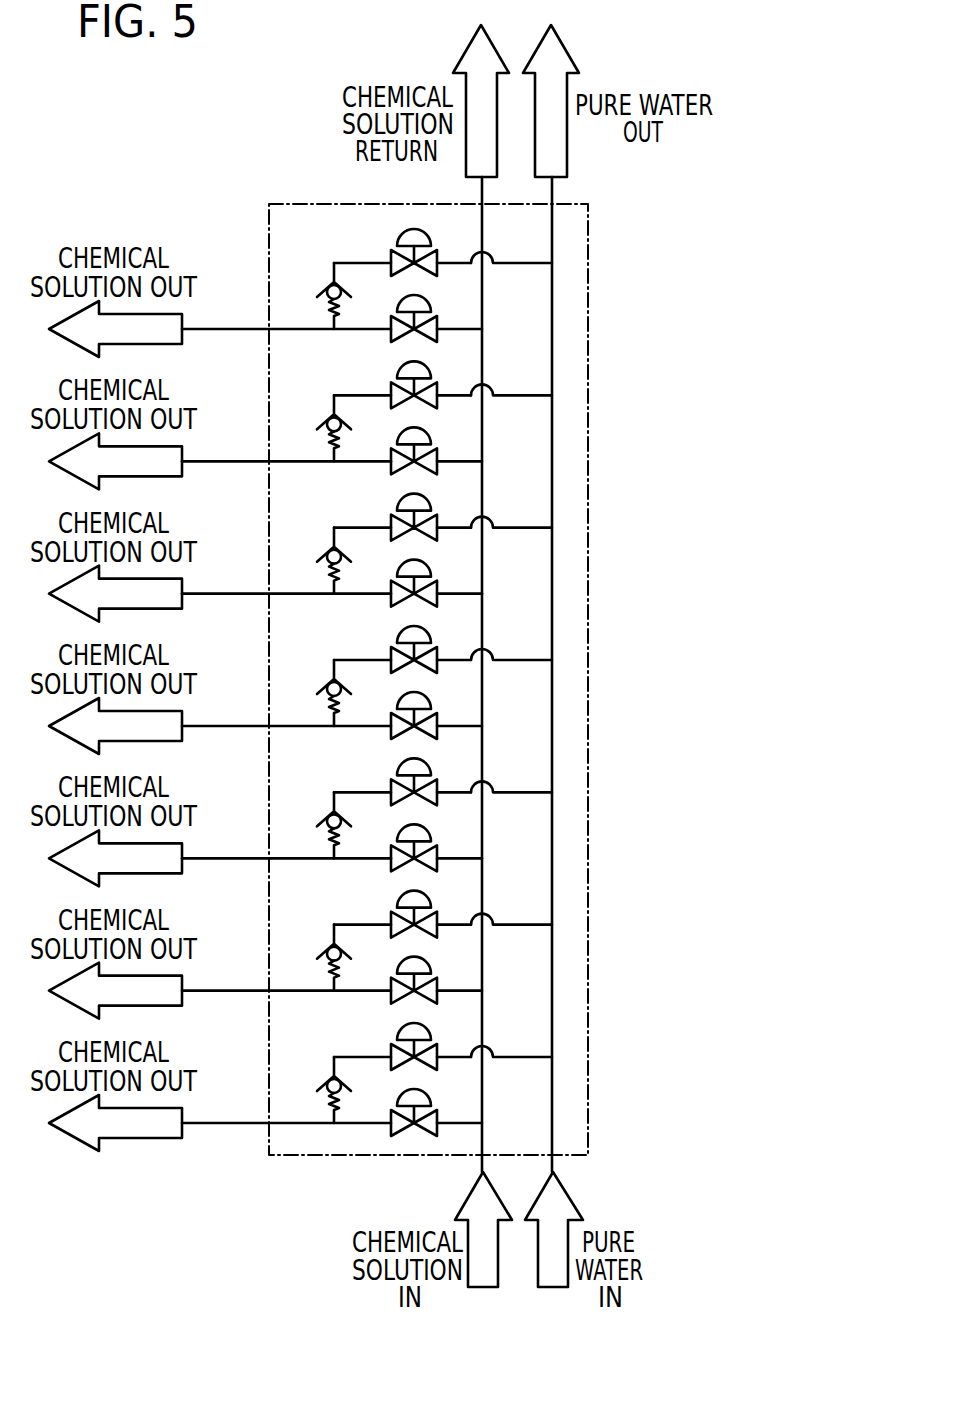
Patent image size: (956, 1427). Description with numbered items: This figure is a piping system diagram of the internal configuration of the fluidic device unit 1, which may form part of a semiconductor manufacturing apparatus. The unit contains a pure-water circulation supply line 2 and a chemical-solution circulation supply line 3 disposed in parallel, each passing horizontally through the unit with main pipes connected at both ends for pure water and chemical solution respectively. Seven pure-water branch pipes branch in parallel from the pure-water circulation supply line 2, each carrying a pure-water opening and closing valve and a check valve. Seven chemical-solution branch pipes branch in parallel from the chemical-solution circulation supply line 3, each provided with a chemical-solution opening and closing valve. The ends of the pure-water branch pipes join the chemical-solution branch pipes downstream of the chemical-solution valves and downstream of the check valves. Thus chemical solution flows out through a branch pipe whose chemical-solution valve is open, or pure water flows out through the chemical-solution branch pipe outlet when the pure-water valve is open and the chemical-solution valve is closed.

The fluidic device unit 1 is at (600, 231).
The pure-water circulation supply line 2 is at (554, 836).
The chemical-solution circulation supply line 3 is at (484, 750).